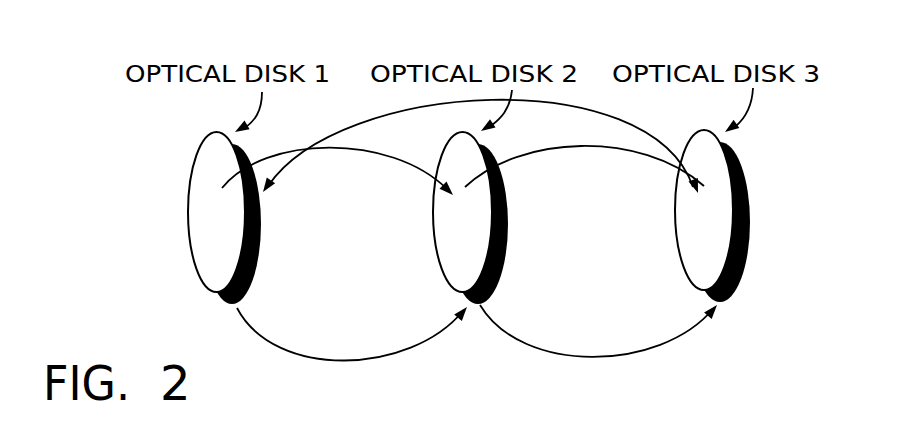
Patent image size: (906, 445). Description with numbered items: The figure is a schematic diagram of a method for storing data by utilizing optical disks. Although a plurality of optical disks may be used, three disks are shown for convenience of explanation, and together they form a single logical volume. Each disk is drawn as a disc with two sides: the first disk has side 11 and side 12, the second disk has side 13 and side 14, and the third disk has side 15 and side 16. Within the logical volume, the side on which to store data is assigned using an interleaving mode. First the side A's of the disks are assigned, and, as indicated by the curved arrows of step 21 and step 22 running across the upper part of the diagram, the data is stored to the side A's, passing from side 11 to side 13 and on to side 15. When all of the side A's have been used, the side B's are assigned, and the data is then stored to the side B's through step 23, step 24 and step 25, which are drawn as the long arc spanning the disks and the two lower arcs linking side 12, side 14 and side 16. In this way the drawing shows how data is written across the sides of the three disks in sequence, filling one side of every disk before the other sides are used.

The side 11 is at (216, 212).
The side 12 is at (258, 277).
The side 13 is at (462, 212).
The side 14 is at (502, 277).
The side 15 is at (704, 210).
The side 16 is at (747, 275).
The step 21 is at (330, 148).
The step 22 is at (577, 150).
The step 23 is at (660, 112).
The step 24 is at (320, 360).
The step 25 is at (572, 358).